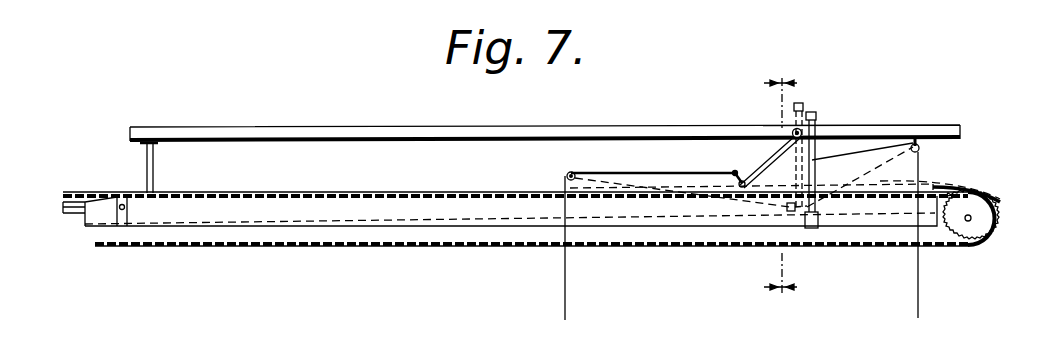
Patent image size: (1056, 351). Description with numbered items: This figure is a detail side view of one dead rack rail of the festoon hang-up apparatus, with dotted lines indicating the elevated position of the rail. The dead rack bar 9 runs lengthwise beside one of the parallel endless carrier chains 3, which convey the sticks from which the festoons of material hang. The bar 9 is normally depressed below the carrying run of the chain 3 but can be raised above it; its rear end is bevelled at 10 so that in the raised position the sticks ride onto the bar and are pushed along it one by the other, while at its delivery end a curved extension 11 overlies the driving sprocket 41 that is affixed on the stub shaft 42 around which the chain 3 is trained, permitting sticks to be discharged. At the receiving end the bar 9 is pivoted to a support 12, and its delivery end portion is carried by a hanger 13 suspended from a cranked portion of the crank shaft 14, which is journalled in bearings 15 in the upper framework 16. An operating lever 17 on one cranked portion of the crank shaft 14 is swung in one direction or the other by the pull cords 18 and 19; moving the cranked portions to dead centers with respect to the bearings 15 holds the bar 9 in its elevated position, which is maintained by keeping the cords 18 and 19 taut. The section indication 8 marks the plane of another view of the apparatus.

The carrier chains 3 is at (72, 194).
The bevelled rear end 10 is at (97, 196).
The supports 12 is at (124, 209).
The dead rack bars 9 is at (371, 207).
The upper framework 16 is at (591, 133).
The bearings 15 is at (793, 131).
The section line 8 is at (780, 184).
The operating lever 17 is at (752, 168).
The crank shaft 14 is at (769, 162).
The hangers 13 is at (812, 155).
The pull cord 18 is at (565, 287).
The pull cord 19 is at (918, 297).
The curved extensions 11 is at (999, 202).
The driving sprockets 41 is at (986, 217).
The stub shafts 42 is at (970, 221).